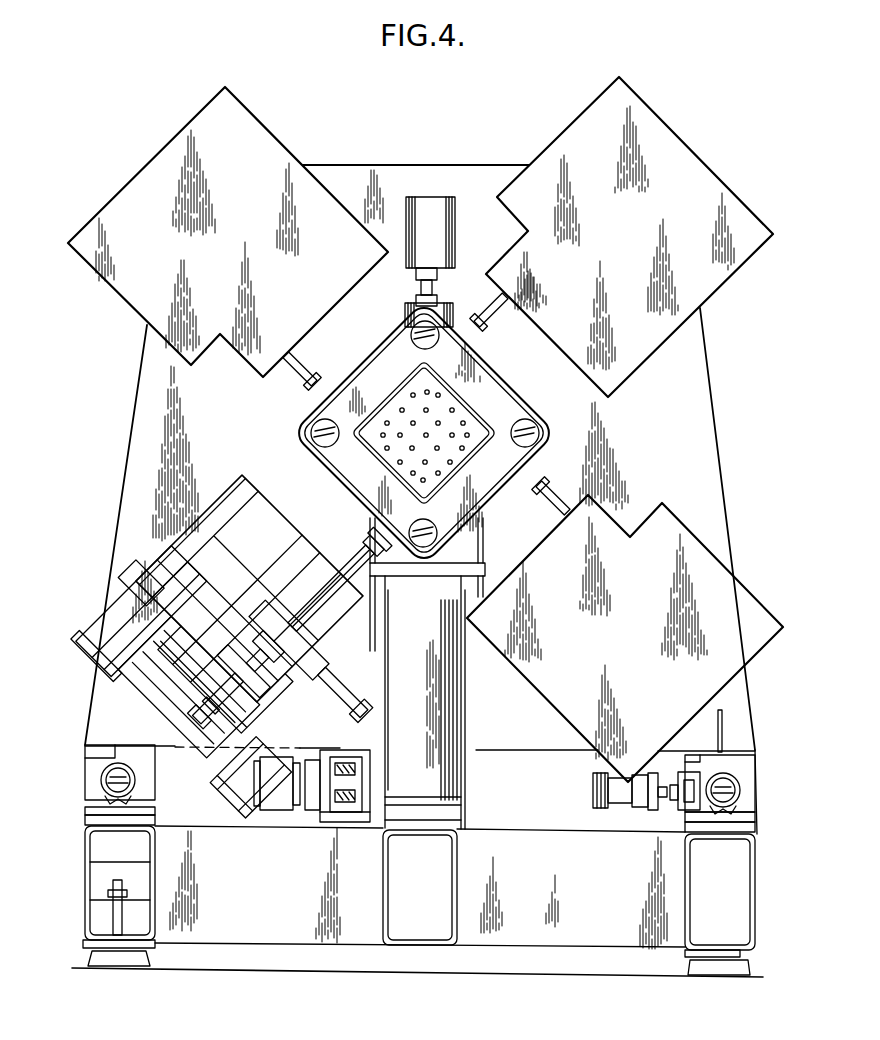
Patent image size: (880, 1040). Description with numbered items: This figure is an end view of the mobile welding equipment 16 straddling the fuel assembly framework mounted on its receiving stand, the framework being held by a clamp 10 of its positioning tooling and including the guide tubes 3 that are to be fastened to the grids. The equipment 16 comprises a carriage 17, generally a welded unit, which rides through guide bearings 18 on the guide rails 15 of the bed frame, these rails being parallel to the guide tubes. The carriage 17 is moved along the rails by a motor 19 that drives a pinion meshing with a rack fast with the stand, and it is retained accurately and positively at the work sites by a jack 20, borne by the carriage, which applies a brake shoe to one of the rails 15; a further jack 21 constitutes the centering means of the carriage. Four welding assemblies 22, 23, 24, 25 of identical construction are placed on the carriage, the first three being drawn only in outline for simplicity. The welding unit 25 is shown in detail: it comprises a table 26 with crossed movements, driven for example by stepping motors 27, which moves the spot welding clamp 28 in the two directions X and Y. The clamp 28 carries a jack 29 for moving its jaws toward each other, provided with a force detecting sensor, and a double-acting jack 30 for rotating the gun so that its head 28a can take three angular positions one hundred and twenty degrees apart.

The guide tube 3 is at (464, 422).
The clamp 10 is at (388, 367).
The guide rails 15 is at (105, 790).
The mobile welding equipment 16 is at (720, 374).
The carriage 17 is at (672, 452).
The guide bearings 18 is at (97, 763).
The motor 19 is at (280, 790).
The jack 20 is at (620, 795).
The jack 21 is at (428, 213).
The welding assembly 22 is at (577, 152).
The welding assembly 23 is at (685, 668).
The welding assembly 24 is at (262, 180).
The welding assembly 25 is at (158, 700).
The table with crossed movements 26 is at (187, 662).
The stepping motors 27 is at (115, 607).
The spot welding clamp 28 is at (356, 575).
The head of the gun 28a is at (367, 545).
The jack 29 is at (205, 705).
The double-acting jack 30 is at (342, 692).